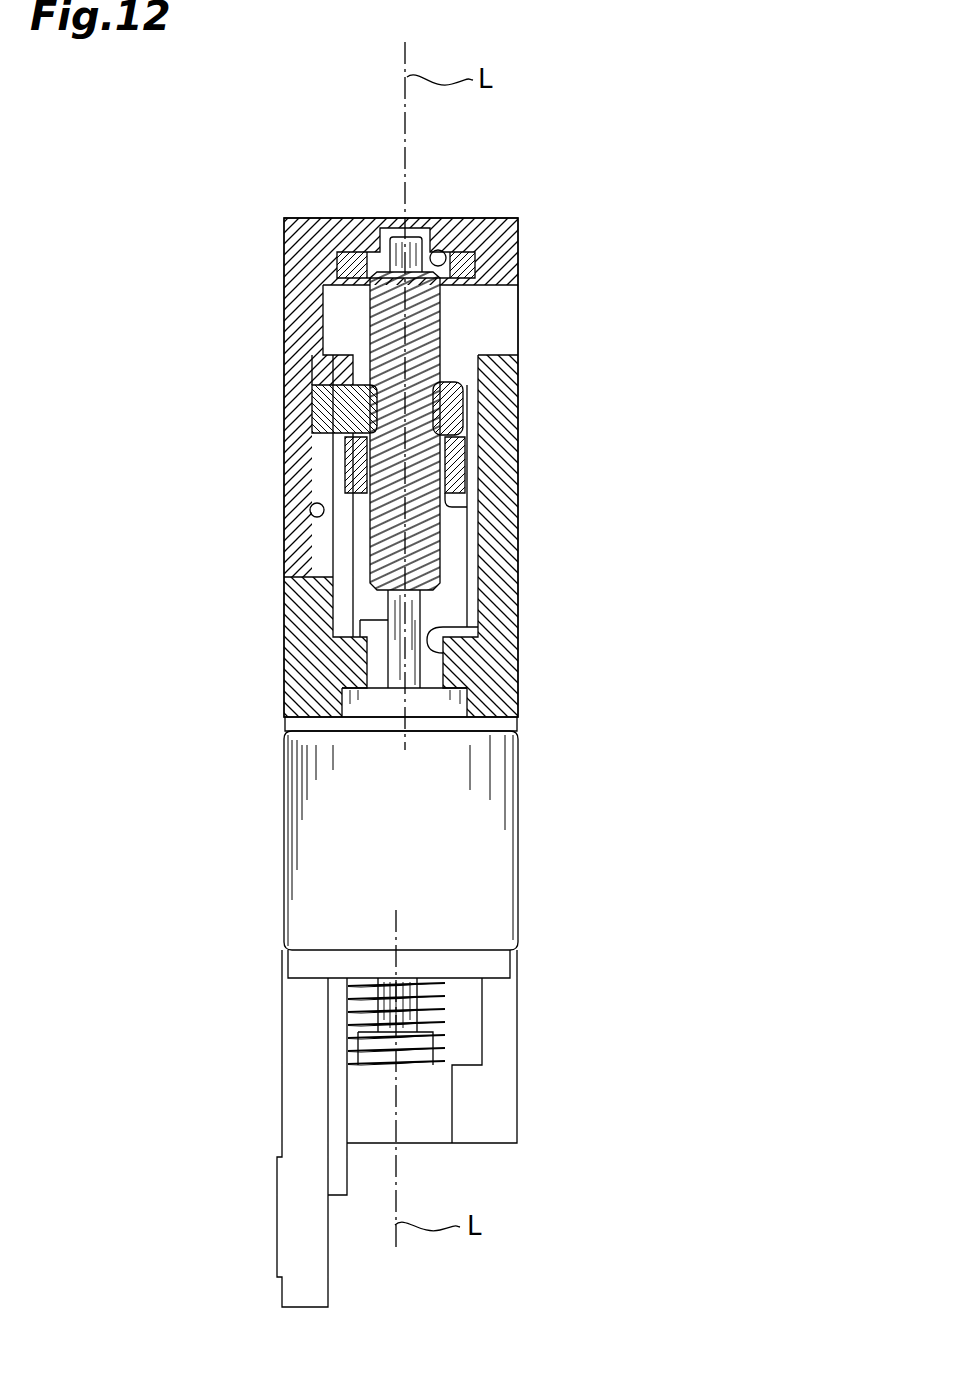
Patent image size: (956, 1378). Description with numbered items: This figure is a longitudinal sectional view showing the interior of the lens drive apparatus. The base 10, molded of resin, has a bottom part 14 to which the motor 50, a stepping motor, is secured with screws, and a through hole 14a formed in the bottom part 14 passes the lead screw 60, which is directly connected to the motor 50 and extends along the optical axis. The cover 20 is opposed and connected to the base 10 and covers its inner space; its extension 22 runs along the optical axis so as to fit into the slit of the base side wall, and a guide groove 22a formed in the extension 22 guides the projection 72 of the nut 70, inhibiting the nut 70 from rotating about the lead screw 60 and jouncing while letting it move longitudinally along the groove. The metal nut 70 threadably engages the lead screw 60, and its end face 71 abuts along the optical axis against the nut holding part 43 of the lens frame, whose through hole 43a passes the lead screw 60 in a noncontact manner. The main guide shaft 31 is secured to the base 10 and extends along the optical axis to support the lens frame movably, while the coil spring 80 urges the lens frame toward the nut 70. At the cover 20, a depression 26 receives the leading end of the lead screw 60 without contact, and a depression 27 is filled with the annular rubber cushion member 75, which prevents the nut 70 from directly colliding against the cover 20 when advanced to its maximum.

The base 10 is at (518, 680).
The bottom part 14 is at (505, 708).
The through hole 14a is at (478, 628).
The cover 20 is at (507, 217).
The extension 22 is at (283, 467).
The guide groove 22a is at (310, 510).
The depression 26 is at (387, 217).
The depression 27 is at (442, 217).
The main guide shaft 31 is at (387, 1033).
The nut holding part 43 is at (470, 466).
The through hole 43a is at (470, 498).
The motor 50 is at (490, 883).
The lead screw 60 is at (447, 333).
The nut 70 is at (497, 386).
The end face 71 is at (495, 448).
The projection 72 is at (327, 412).
The cushion member 75 is at (348, 217).
The coil spring 80 is at (450, 1000).